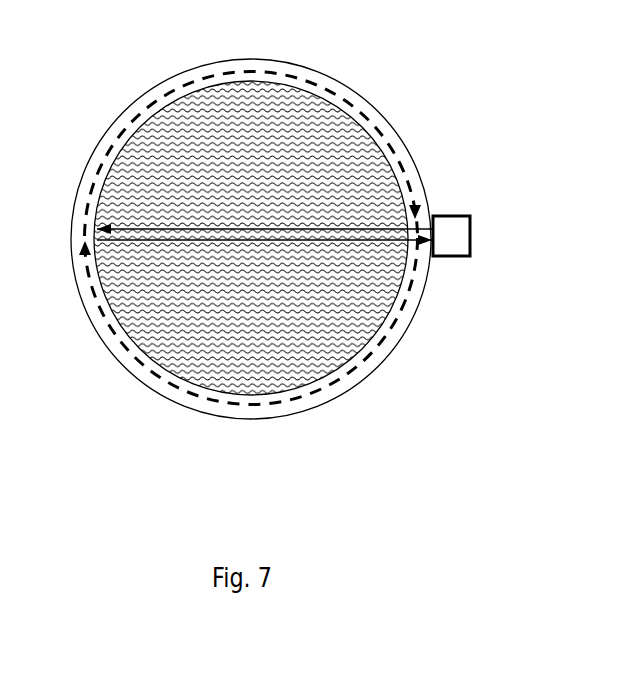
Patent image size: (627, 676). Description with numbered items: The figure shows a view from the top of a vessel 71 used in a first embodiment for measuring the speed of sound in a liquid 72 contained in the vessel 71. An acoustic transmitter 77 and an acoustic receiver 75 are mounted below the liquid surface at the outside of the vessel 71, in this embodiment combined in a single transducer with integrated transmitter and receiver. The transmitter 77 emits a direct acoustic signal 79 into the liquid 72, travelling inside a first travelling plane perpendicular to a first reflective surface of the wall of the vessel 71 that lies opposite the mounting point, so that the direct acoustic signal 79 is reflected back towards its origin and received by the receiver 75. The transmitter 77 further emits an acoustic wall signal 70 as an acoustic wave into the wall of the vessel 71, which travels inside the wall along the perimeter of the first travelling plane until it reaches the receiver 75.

The acoustic wall signal 70 is at (352, 372).
The vessel 71 is at (95, 147).
The liquid 72 is at (323, 158).
The acoustic receiver 75 is at (450, 256).
The acoustic transmitter 77 is at (494, 275).
The direct acoustic signal 79 is at (250, 245).